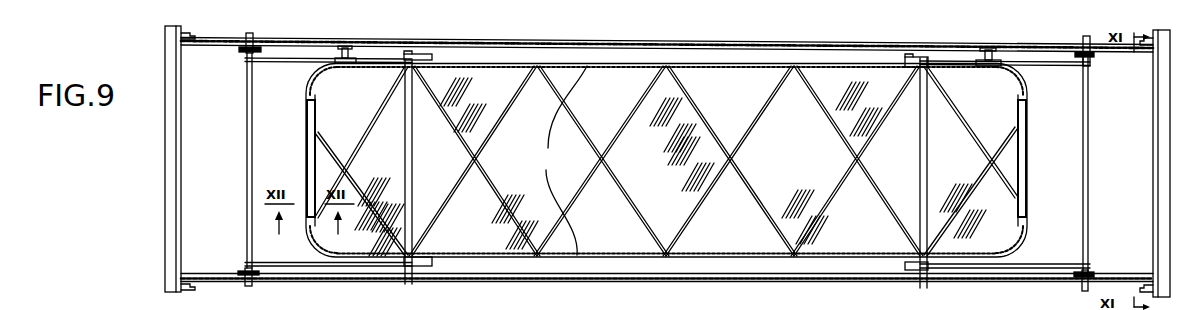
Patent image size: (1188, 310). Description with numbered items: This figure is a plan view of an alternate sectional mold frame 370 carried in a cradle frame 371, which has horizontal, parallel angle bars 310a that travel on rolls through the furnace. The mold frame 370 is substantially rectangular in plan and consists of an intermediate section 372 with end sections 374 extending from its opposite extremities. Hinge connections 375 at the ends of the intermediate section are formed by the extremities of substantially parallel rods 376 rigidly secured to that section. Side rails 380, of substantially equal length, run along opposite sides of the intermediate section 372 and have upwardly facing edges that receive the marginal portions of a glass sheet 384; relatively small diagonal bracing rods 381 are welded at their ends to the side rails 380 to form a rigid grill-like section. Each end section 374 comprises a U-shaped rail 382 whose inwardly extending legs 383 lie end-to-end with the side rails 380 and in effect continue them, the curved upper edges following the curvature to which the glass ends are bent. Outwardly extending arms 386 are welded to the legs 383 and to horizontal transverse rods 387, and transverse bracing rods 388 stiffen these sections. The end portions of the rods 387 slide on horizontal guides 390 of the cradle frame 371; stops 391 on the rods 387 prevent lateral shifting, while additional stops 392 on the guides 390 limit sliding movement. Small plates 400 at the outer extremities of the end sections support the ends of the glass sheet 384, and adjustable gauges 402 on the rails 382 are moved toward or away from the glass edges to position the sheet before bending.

The angle bars 310a is at (168, 260).
The sectional mold frame 370 is at (664, 187).
The cradle frame 371 is at (606, 284).
The intermediate section 372 is at (705, 259).
The end sections 374 is at (301, 242).
The hinge connections 375 is at (409, 285).
The parallel rods 376 is at (412, 183).
The side rails 380 is at (555, 160).
The diagonal bracing rods 381 is at (748, 137).
The U-shaped rails 382 is at (309, 93).
The inwardly extending legs 383 is at (377, 67).
The glass sheet 384 is at (853, 237).
The outwardly extending arms 386 is at (283, 63).
The transverse rods 387 is at (246, 166).
The transverse bracing rods 388 is at (353, 141).
The guides 390 is at (1120, 53).
The stops 391 is at (240, 52).
The additional stops 392 is at (277, 281).
The plates 400 is at (305, 134).
The adjustable gauges 402 is at (355, 57).